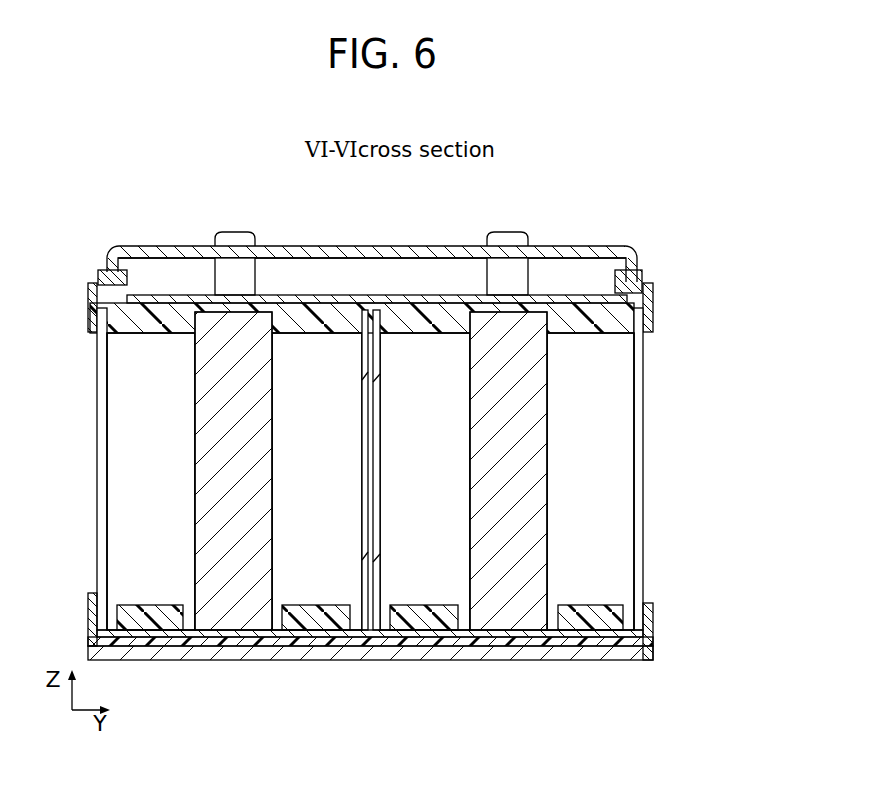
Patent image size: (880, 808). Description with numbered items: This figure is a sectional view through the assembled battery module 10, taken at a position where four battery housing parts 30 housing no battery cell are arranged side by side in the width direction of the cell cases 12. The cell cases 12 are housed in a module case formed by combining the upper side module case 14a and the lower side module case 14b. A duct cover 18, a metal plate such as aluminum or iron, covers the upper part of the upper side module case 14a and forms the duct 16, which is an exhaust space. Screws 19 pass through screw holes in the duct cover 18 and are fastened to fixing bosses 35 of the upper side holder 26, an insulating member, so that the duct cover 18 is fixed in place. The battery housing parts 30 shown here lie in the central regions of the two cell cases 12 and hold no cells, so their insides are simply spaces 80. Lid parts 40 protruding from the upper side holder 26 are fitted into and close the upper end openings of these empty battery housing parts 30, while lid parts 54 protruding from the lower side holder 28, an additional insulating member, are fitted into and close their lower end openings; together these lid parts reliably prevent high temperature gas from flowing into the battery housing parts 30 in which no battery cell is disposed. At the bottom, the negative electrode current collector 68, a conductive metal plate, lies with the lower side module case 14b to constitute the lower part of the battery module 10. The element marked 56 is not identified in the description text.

The battery module 10 is at (632, 230).
The cell case 12 is at (650, 425).
The upper side module case 14a is at (646, 270).
The lower side module case 14b is at (658, 650).
The duct 16 is at (384, 276).
The duct cover 18 is at (170, 246).
The screw 19 is at (238, 232).
The upper side holder 26 is at (658, 312).
The lower side holder 28 is at (653, 626).
The battery housing part 30 is at (195, 532).
The fixing boss 35 is at (257, 278).
The lid part 40 is at (153, 336).
The lid part 54 is at (153, 605).
The insulating sheet 56 is at (444, 296).
The negative electrode current collector 68 is at (401, 646).
The space 80 is at (142, 474).